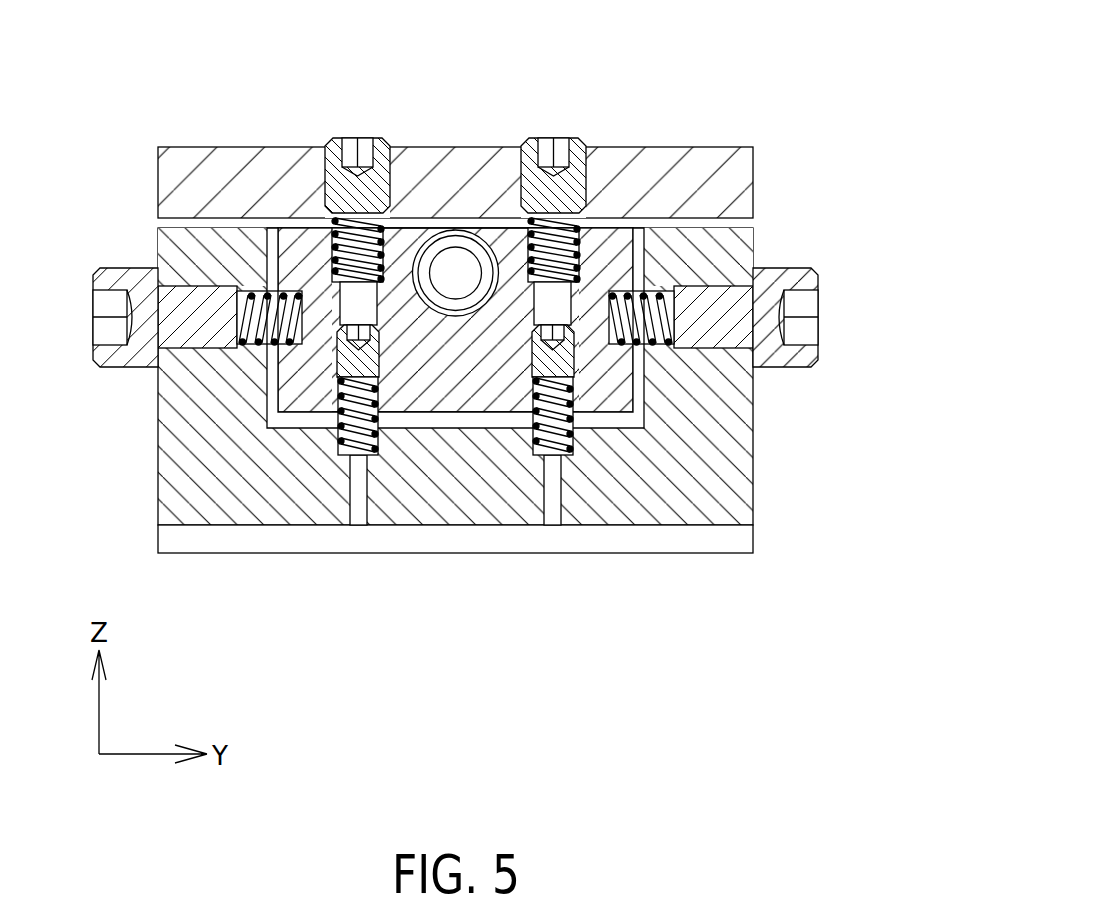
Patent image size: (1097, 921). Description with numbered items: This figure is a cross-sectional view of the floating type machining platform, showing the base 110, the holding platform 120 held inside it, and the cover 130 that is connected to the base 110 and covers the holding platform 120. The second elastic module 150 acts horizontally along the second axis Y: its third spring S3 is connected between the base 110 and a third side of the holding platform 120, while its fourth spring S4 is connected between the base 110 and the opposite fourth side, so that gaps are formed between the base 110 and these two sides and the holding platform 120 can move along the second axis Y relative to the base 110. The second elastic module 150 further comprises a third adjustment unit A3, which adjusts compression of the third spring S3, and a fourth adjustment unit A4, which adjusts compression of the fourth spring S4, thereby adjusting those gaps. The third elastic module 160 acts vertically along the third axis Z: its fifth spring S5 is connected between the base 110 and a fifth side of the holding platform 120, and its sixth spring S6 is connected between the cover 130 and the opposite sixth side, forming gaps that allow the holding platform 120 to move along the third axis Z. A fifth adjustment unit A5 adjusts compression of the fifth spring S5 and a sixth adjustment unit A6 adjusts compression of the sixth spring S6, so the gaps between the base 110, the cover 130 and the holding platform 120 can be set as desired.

The base 110 is at (735, 462).
The holding platform 120 is at (627, 388).
The cover 130 is at (712, 162).
The second elastic module 150 is at (850, 318).
The third elastic module 160 is at (562, 107).
The third adjustment unit A3 is at (785, 277).
The fourth adjustment unit A4 is at (125, 277).
The fifth adjustment unit A5 is at (345, 357).
The sixth adjustment unit A6 is at (336, 155).
The third spring S3 is at (637, 290).
The fourth spring S4 is at (273, 292).
The fifth spring S5 is at (372, 417).
The sixth spring S6 is at (370, 221).